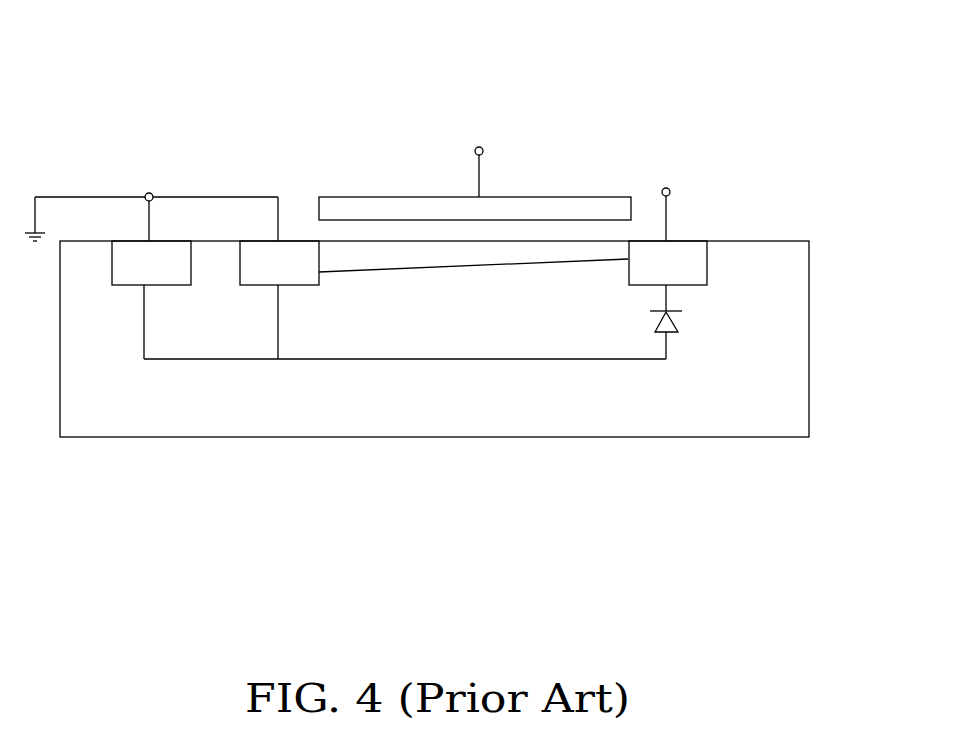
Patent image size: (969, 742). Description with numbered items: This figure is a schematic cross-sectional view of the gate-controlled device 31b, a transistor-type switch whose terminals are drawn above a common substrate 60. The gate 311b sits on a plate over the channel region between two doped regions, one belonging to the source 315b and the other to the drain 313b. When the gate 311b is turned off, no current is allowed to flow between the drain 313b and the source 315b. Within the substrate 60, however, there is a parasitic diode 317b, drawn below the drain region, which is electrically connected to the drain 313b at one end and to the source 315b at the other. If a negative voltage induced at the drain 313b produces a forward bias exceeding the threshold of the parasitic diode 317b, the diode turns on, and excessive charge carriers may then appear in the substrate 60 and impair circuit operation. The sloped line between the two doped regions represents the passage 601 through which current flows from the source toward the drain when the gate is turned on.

The gate-controlled device 31b is at (380, 118).
The gate 311b is at (482, 147).
The drain 313b is at (669, 188).
The source 315b is at (151, 193).
The parasitic diode 317b is at (677, 322).
The passage 601 is at (392, 250).
The substrate 60 is at (823, 241).